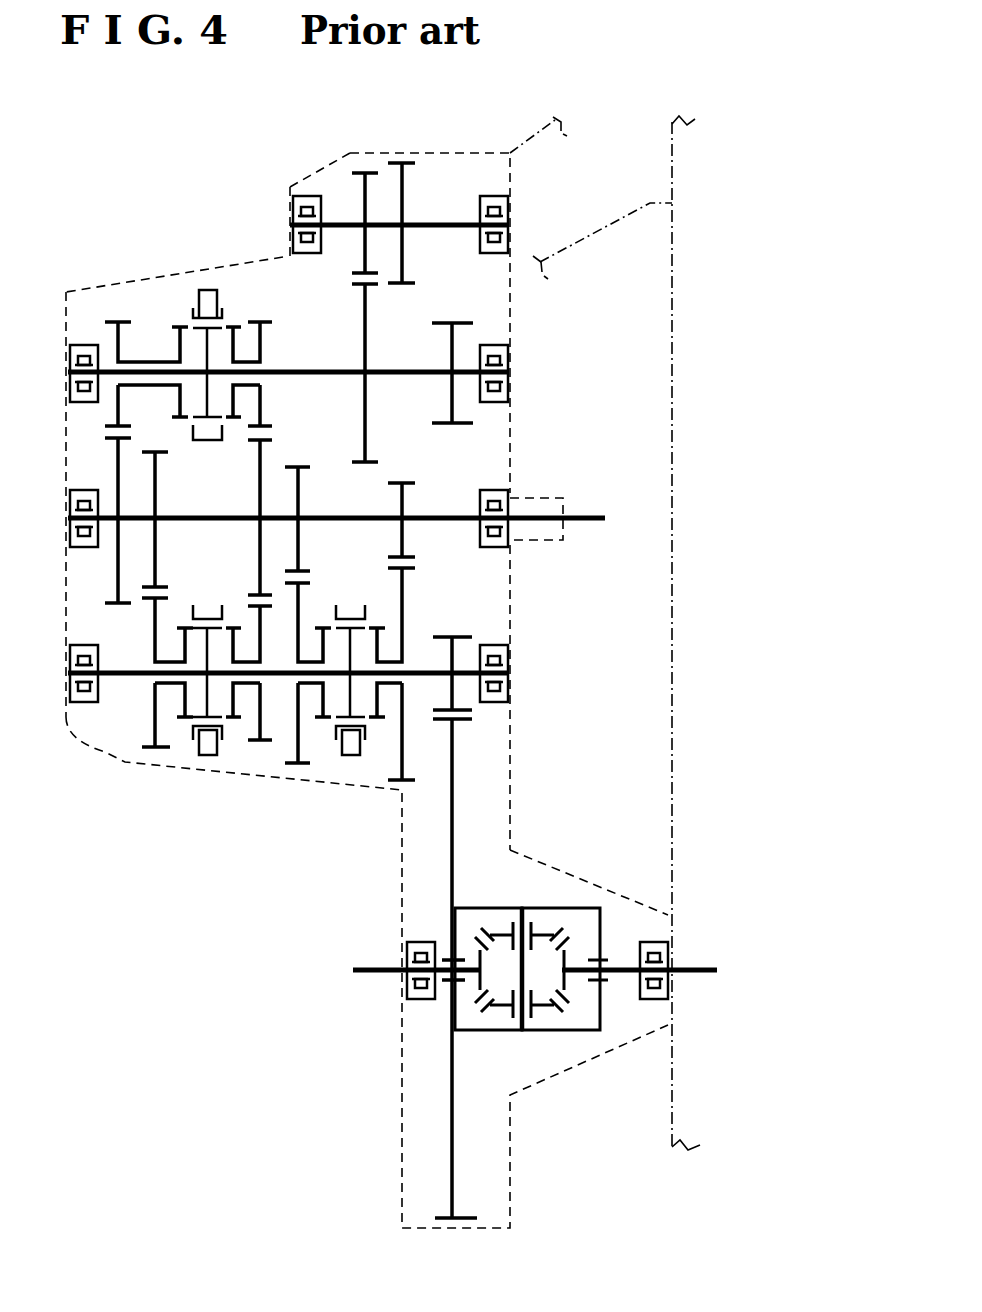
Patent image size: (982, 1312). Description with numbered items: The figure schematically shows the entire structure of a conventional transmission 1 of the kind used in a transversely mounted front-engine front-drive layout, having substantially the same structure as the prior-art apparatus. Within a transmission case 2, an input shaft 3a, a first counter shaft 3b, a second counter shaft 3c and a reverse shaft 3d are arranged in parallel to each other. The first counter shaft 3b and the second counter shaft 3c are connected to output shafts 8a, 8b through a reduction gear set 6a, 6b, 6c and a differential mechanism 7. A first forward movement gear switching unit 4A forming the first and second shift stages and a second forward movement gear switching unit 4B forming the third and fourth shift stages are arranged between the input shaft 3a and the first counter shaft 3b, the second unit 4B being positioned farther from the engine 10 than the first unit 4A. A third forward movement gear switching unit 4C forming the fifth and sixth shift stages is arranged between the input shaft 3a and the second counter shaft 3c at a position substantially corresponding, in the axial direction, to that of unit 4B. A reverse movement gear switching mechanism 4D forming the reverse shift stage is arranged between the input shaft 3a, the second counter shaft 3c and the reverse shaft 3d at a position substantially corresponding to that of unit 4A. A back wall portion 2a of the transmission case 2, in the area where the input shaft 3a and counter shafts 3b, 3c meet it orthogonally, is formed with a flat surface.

The transmission 1 is at (130, 967).
The transmission case 2 is at (452, 152).
The back wall portion 2a is at (62, 568).
The input shaft 3a is at (420, 517).
The first counter shaft 3b is at (415, 678).
The second counter shaft 3c is at (396, 370).
The reverse shaft 3d is at (420, 222).
The first forward movement gear switching unit 4A is at (398, 786).
The second forward movement gear switching unit 4B is at (258, 745).
The third forward movement gear switching unit 4C is at (257, 316).
The reverse movement gear switching mechanism 4D is at (380, 168).
The reduction gear 6a is at (447, 636).
The reduction gear 6b is at (448, 322).
The reduction gear 6c is at (455, 843).
The differential mechanism 7 is at (506, 1036).
The output shaft 8a is at (378, 975).
The output shaft 8b is at (697, 975).
The engine 10 is at (668, 138).